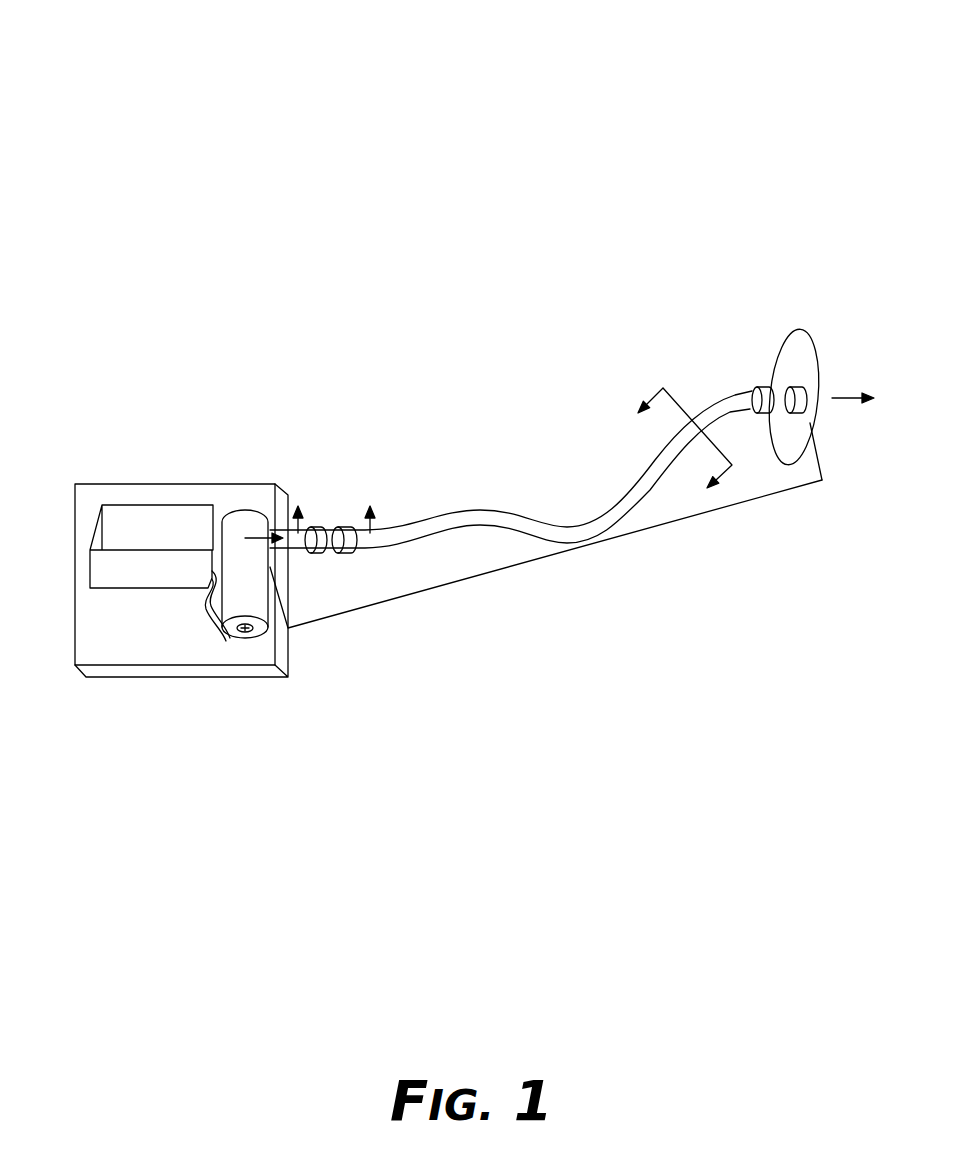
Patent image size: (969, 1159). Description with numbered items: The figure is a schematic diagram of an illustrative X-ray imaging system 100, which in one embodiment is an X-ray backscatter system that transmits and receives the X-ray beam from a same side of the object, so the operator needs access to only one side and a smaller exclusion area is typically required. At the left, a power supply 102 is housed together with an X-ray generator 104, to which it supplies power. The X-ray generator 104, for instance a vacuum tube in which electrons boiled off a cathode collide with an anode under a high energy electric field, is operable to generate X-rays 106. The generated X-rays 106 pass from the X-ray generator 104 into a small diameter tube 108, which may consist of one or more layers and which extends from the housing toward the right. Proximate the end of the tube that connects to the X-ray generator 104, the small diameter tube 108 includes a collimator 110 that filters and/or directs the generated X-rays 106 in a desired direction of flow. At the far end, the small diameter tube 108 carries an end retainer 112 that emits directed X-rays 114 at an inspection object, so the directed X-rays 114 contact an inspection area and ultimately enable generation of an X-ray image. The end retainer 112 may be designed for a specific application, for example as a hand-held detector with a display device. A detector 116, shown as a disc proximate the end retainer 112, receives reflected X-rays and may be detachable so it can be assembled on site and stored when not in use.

The X-ray imaging system 100 is at (179, 43).
The power supply 102 is at (113, 528).
The X-ray generator 104 is at (250, 603).
The generated X-rays 106 is at (255, 516).
The small diameter tube 108 is at (507, 570).
The collimator 110 is at (335, 527).
The end retainer 112 is at (778, 392).
The directed X-rays 114 is at (834, 371).
The detector 116 is at (775, 352).